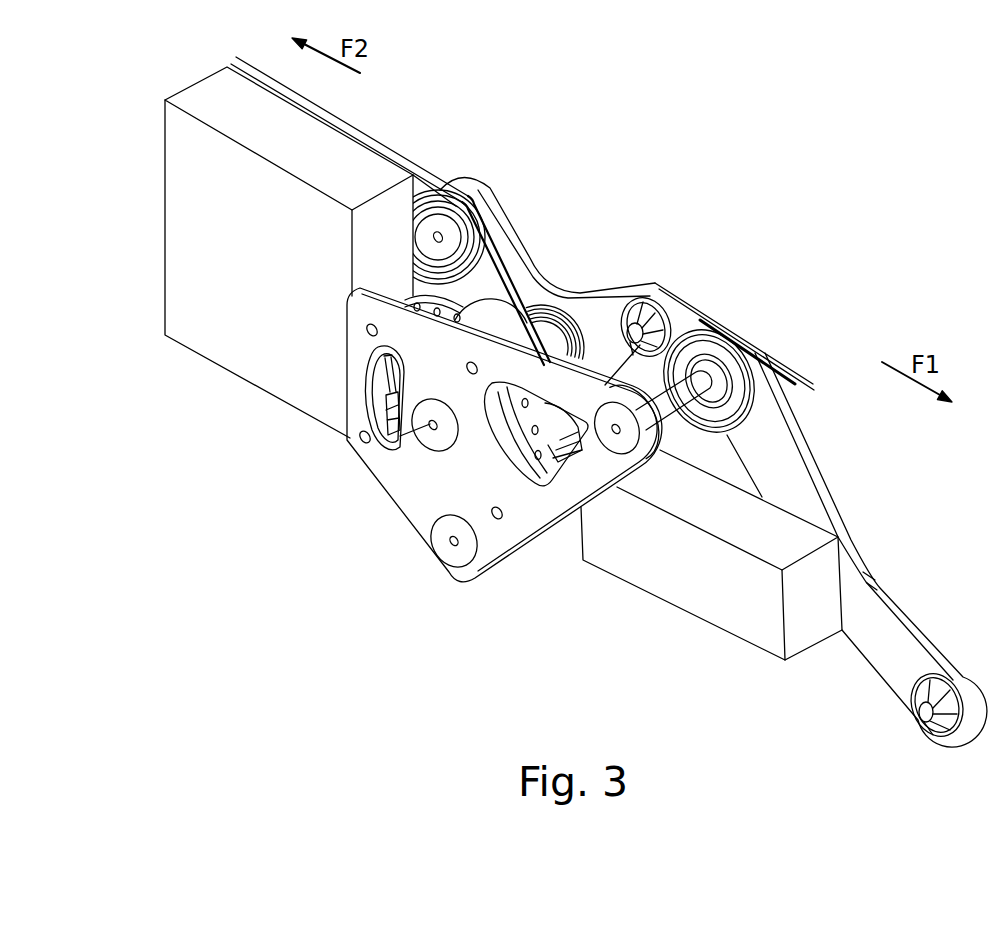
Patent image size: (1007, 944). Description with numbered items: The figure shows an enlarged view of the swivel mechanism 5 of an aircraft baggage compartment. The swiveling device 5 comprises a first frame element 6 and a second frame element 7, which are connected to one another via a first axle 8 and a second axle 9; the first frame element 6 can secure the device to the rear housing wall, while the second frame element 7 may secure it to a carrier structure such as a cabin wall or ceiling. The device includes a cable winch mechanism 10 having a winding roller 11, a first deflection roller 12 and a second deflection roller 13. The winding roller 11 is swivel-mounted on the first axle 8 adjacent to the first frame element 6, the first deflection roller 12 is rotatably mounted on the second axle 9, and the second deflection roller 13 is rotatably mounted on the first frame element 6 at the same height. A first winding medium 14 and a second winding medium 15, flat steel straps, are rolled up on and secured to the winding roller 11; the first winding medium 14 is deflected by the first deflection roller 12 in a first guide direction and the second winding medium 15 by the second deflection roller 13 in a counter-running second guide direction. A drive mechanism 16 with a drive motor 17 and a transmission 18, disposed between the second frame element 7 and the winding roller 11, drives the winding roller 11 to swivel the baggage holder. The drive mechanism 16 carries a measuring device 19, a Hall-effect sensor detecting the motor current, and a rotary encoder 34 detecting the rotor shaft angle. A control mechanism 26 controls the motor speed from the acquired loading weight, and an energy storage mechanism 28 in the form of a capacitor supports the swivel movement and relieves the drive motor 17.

The swivel mechanism 5 is at (672, 132).
The first frame element 6 is at (790, 493).
The second frame element 7 is at (430, 485).
The first axle 8 is at (397, 445).
The second axle 9 is at (622, 432).
The cable winch mechanism 10 is at (530, 207).
The winding roller 11 is at (563, 329).
The first deflection roller 12 is at (740, 390).
The second deflection roller 13 is at (443, 188).
The first winding medium 14 is at (753, 350).
The second winding medium 15 is at (381, 140).
The drive mechanism 16 is at (526, 278).
The drive motor 17 is at (506, 280).
The transmission 18 is at (506, 280).
The measuring device 19 is at (375, 367).
The control mechanism 26 is at (237, 329).
The energy storage mechanism 28 is at (727, 635).
The rotary encoder 34 is at (415, 430).